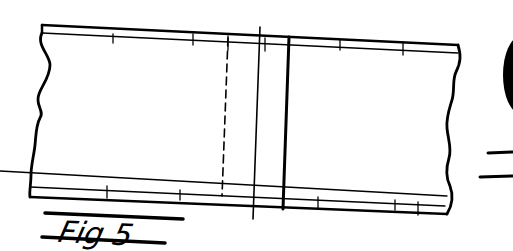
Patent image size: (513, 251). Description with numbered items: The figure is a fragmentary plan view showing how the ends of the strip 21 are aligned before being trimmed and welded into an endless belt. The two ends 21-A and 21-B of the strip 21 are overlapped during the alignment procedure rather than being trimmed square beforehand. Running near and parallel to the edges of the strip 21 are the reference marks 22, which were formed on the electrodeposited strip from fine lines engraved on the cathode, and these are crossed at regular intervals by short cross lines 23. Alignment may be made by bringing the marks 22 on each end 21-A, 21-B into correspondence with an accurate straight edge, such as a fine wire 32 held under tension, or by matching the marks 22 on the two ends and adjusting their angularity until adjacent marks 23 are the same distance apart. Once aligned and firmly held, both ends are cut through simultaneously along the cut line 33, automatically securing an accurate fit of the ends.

The strip 21 is at (245, 119).
The end of strip 21-A is at (290, 108).
The end of strip 21-B is at (223, 111).
The reference marks 22 is at (74, 34).
The short cross lines 23 is at (193, 35).
The fine wire 32 is at (447, 197).
The cut line 33 is at (259, 114).